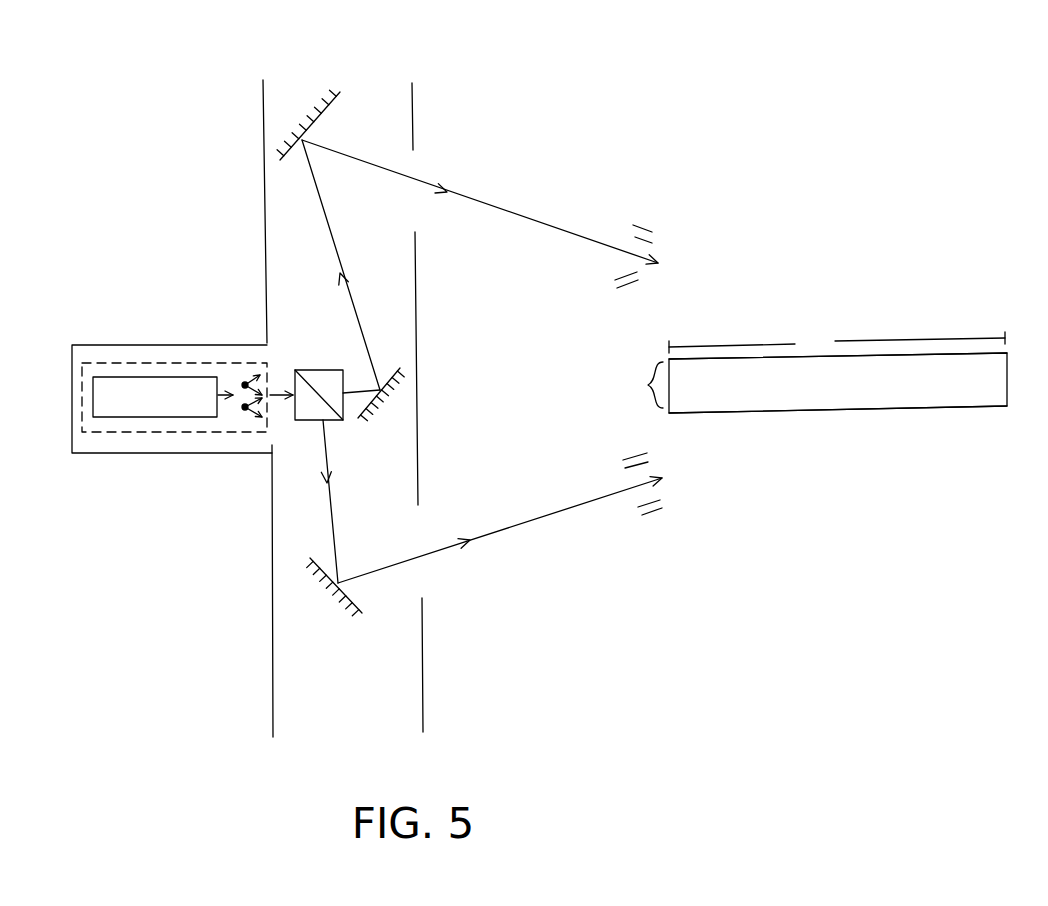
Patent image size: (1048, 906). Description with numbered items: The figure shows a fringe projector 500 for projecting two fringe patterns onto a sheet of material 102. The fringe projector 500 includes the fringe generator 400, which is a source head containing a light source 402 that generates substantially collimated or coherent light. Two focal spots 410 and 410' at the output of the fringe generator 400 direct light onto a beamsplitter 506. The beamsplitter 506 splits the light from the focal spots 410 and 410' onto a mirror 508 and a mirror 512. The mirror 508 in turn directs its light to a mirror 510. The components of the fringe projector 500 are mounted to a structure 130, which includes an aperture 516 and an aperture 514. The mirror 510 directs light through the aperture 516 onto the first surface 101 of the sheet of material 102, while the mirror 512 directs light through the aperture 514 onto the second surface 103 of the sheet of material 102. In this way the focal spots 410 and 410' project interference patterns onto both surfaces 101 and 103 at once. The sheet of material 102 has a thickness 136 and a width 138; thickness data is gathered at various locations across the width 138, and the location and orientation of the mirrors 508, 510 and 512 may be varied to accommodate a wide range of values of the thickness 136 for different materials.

The fringe projector 500 is at (212, 108).
The structure 130 is at (263, 220).
The light source 402 is at (130, 377).
The fringe generator 400 is at (160, 433).
The focal spot 410 is at (229, 346).
The focal spot 410' is at (235, 452).
The beamsplitter 506 is at (323, 368).
The mirror 508 is at (382, 368).
The mirror 510 is at (328, 111).
The mirror 512 is at (358, 600).
The aperture 514 is at (445, 515).
The aperture 516 is at (427, 163).
The sheet of material 102 is at (860, 322).
The first surface 101 is at (755, 357).
The second surface 103 is at (765, 413).
The thickness 136 is at (634, 385).
The width 138 is at (837, 343).